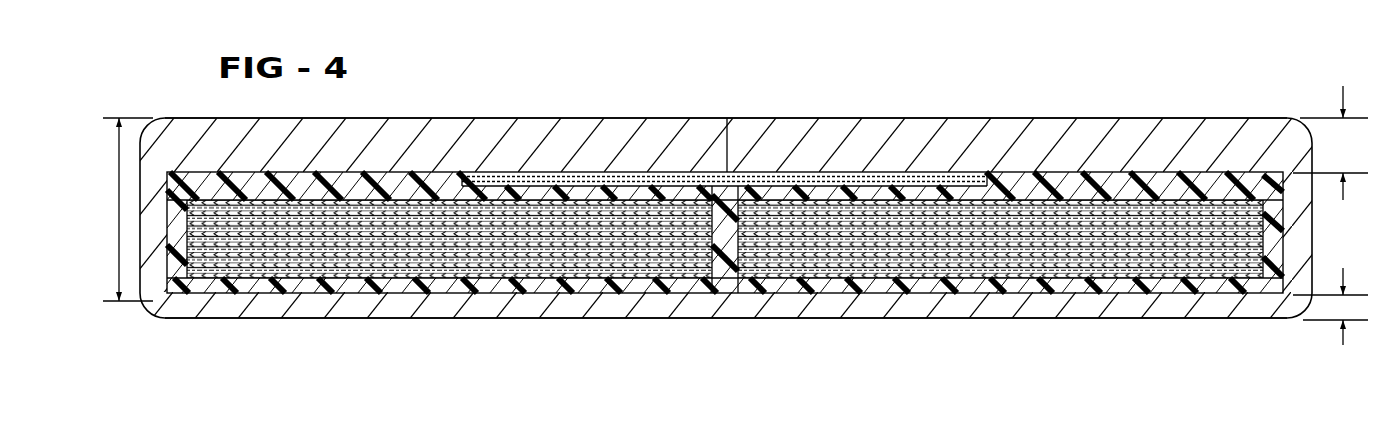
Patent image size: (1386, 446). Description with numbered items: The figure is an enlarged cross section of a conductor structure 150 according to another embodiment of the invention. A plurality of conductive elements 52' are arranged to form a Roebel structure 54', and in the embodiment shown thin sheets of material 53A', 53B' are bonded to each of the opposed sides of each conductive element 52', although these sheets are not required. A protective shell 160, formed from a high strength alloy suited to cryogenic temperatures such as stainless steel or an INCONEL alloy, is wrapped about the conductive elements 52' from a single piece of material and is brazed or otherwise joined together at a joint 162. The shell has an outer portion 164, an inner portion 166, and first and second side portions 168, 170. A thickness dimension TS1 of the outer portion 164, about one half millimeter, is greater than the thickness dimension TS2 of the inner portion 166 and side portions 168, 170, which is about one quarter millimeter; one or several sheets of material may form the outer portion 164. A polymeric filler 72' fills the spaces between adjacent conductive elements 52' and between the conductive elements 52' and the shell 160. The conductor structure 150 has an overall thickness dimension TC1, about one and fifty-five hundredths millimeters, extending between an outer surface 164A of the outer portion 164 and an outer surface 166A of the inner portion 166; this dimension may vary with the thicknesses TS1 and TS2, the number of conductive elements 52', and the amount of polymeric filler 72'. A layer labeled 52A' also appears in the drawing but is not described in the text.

The conductor structure 150 is at (734, 201).
The protective shell 160 is at (730, 218).
The joint 162 is at (730, 138).
The outer portion 164 is at (612, 135).
The outer surface of the outer portion 164A is at (495, 118).
The inner portion 166 is at (358, 293).
The outer surface of the inner portion 166A is at (492, 303).
The first side portion 168 is at (147, 270).
The second side portion 170 is at (1302, 200).
The conductive elements 52' is at (725, 142).
The electrode tab layer 52A' is at (724, 126).
The Roebel structure 54' is at (997, 135).
The thin sheet of material 53A' is at (1000, 303).
The thin sheet of material 53B' is at (1000, 278).
The polymeric filler 72' is at (727, 277).
The overall thickness dimension TC1 is at (126, 209).
The thickness dimension of the outer portion TS1 is at (1340, 97).
The thickness dimension of the inner and side portions TS2 is at (1340, 343).